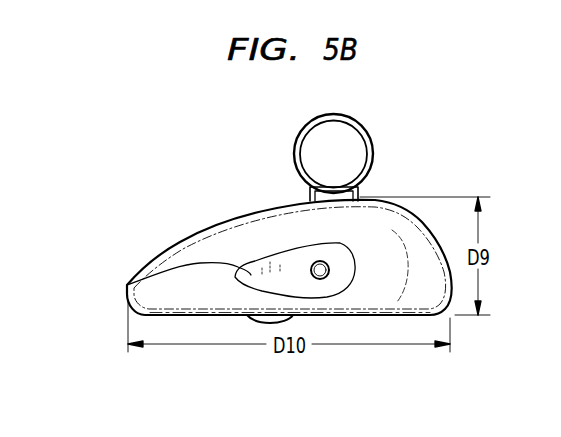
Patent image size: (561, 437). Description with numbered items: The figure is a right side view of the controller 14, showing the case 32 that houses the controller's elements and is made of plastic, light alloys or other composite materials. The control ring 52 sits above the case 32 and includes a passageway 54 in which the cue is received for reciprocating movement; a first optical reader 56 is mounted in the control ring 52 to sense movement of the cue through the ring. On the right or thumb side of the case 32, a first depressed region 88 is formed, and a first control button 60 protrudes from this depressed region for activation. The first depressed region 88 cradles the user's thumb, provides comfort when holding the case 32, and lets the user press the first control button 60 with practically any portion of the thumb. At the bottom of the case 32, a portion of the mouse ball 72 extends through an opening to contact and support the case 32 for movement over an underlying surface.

The controller 14 is at (122, 232).
The case 32 is at (185, 243).
The control ring 52 is at (373, 147).
The passageway 54 is at (345, 138).
The first optical reader 56 is at (341, 188).
The first control button 60 is at (317, 261).
The mouse ball 72 is at (250, 321).
The first depressed region 88 is at (128, 285).